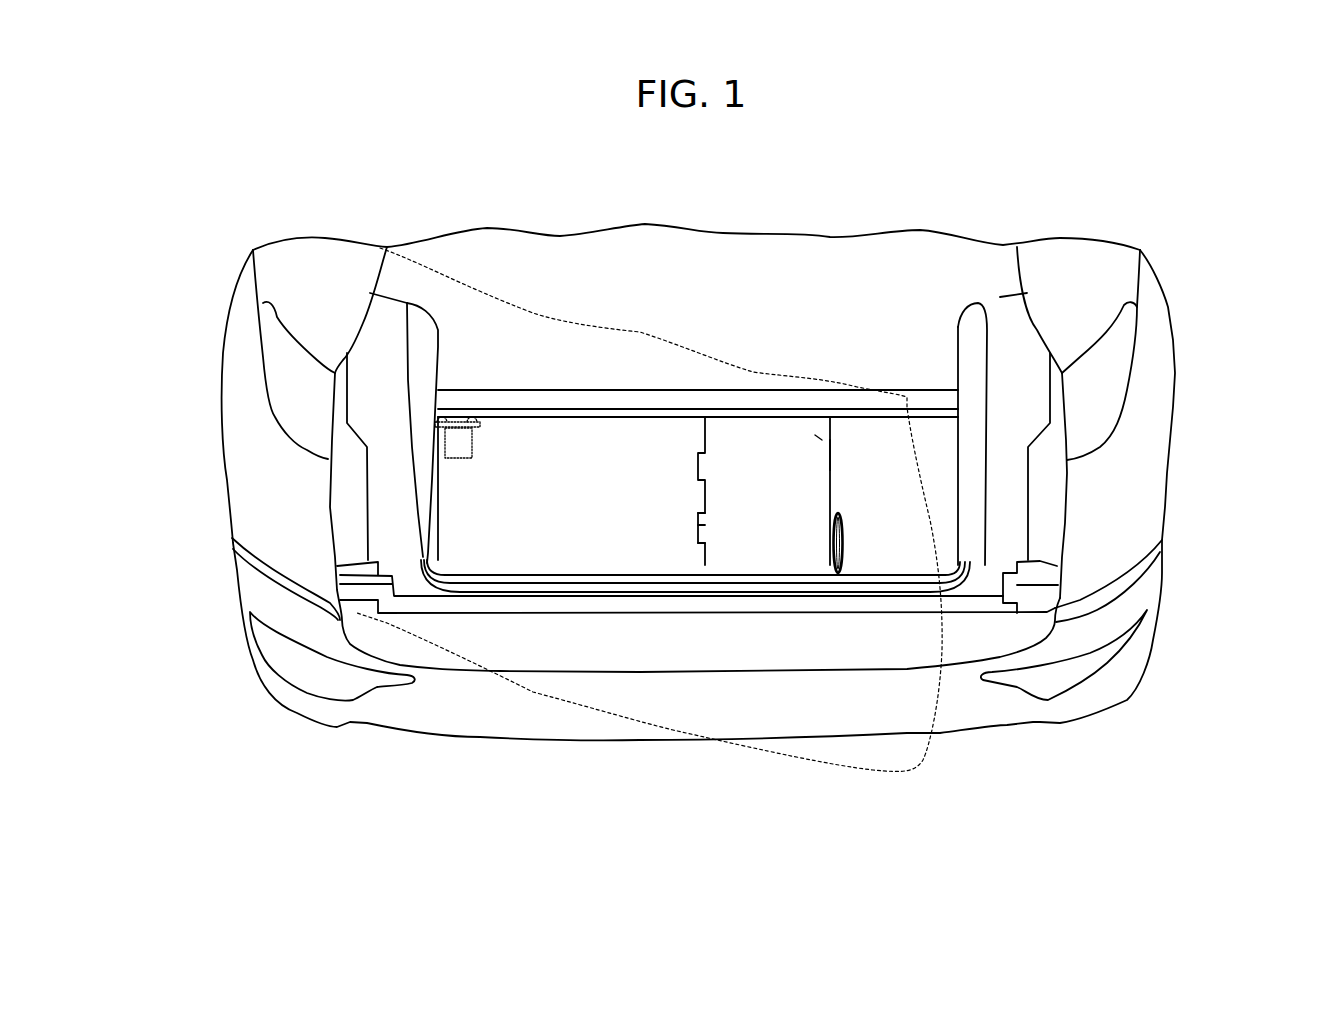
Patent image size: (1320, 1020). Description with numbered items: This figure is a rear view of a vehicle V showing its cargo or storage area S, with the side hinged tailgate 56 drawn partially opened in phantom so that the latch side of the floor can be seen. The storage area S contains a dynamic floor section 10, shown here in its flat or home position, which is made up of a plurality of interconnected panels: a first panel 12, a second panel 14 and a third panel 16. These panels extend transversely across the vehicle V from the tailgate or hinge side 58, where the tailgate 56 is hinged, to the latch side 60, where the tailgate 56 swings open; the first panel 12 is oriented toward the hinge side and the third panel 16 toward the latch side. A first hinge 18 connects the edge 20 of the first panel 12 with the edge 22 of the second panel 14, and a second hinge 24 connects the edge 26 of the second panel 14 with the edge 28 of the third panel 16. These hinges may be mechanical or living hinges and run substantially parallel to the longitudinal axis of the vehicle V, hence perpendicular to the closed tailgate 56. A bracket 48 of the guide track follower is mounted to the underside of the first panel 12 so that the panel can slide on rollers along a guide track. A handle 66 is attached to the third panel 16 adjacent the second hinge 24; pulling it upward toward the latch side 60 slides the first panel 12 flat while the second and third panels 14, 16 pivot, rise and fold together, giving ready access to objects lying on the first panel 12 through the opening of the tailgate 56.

The vehicle V is at (1123, 188).
The storage area S is at (577, 357).
The dynamic floor section 10 is at (460, 548).
The first panel 12 is at (590, 514).
The second panel 14 is at (775, 514).
The third panel 16 is at (906, 514).
The first hinge 18 is at (700, 532).
The edge of the first panel 20 is at (702, 562).
The edge of the second panel 22 is at (703, 530).
The second hinge 24 is at (832, 453).
The edge of the second panel 26 is at (818, 440).
The edge of the third panel 28 is at (838, 497).
The bracket 48 is at (470, 441).
The tailgate 56 is at (618, 327).
The tailgate side 58 is at (328, 492).
The latch side 60 is at (1067, 525).
The handle 66 is at (846, 548).